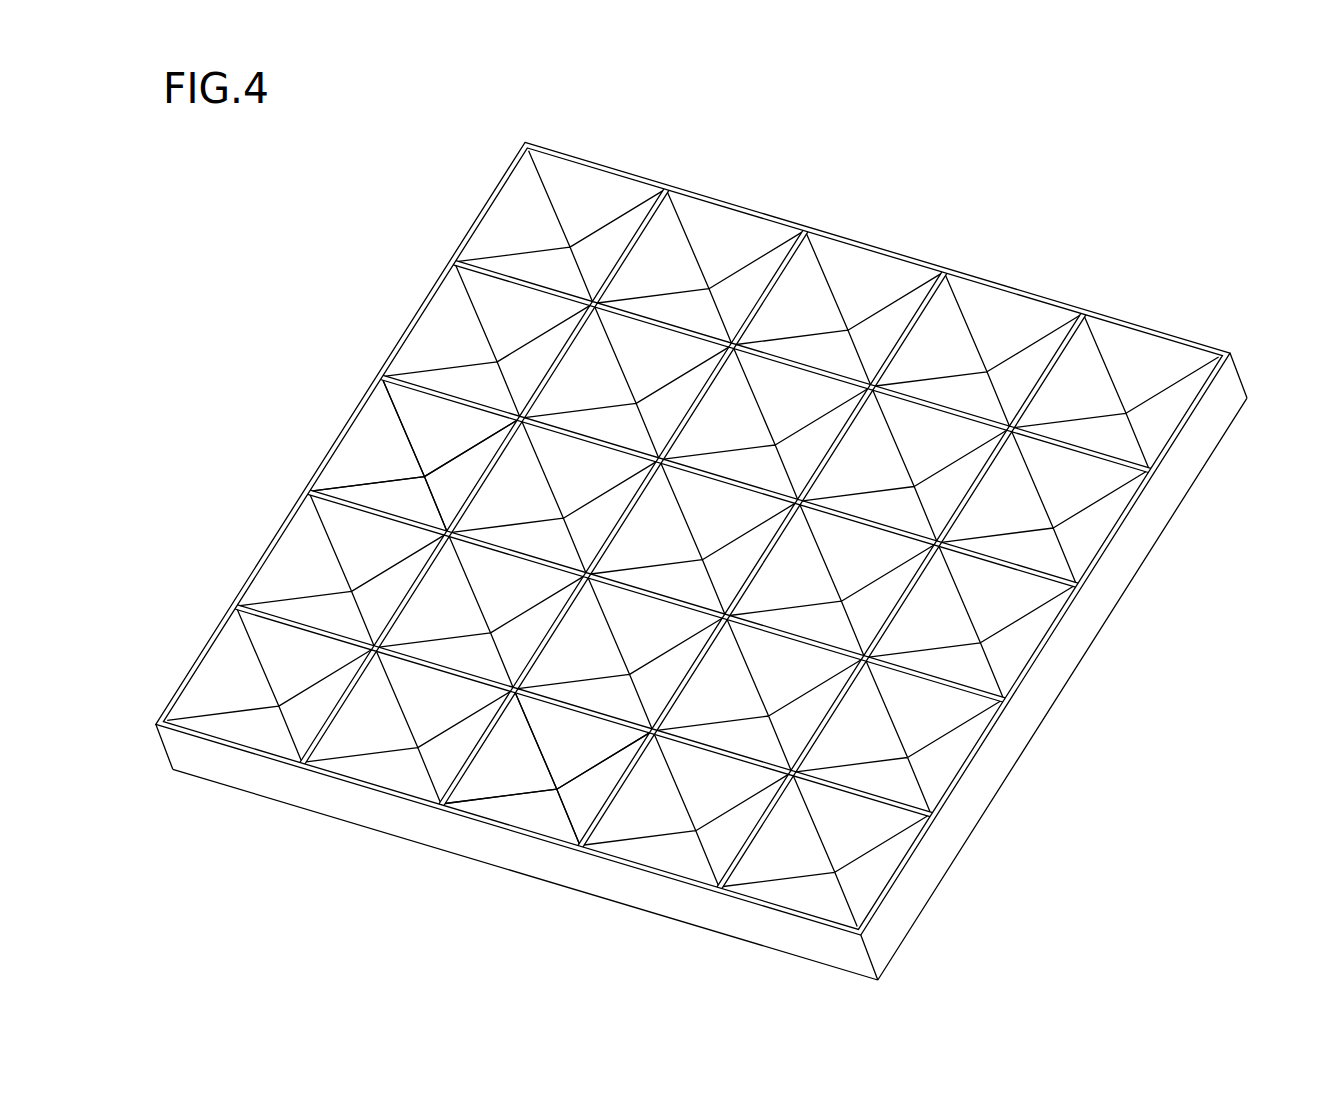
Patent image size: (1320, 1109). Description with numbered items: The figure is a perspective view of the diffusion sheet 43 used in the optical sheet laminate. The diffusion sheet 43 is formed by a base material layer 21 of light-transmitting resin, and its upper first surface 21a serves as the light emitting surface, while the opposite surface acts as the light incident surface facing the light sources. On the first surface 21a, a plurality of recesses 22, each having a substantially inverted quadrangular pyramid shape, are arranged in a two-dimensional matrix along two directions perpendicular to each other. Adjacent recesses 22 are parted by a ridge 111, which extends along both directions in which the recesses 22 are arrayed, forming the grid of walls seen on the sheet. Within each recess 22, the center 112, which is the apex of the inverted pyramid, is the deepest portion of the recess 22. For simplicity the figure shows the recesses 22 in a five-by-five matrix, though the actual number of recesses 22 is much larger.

The diffusion sheet 43 is at (970, 178).
The base material layer 21 is at (1082, 637).
The first surface 21a is at (1145, 328).
The recesses 22 is at (717, 225).
The ridge 111 is at (553, 353).
The center (apex of the inverted pyramid) 112 is at (425, 480).